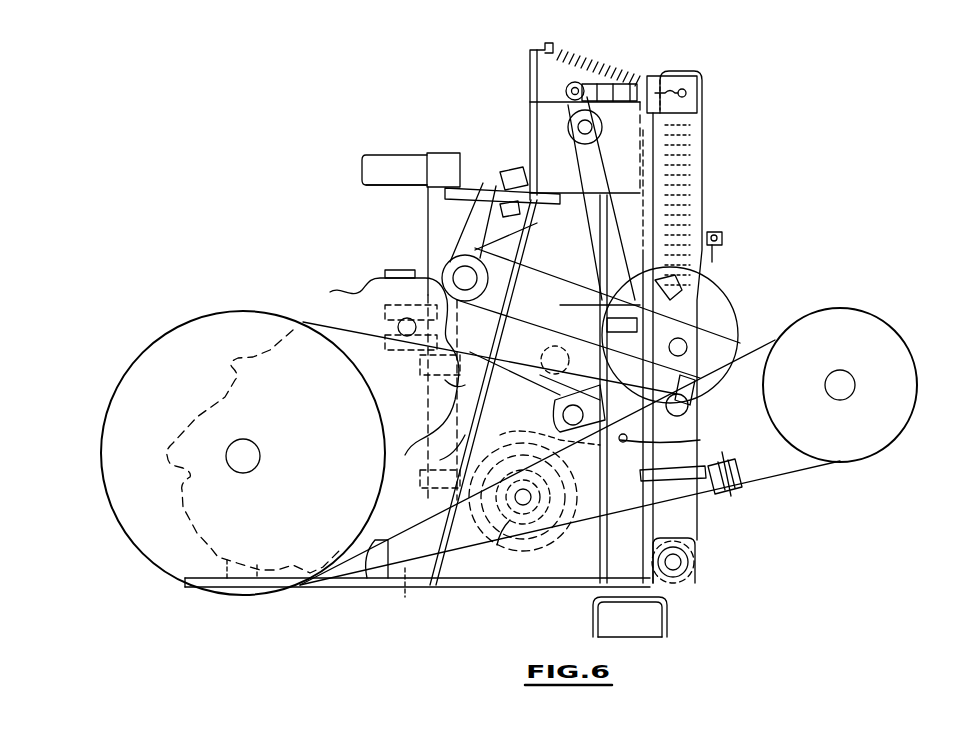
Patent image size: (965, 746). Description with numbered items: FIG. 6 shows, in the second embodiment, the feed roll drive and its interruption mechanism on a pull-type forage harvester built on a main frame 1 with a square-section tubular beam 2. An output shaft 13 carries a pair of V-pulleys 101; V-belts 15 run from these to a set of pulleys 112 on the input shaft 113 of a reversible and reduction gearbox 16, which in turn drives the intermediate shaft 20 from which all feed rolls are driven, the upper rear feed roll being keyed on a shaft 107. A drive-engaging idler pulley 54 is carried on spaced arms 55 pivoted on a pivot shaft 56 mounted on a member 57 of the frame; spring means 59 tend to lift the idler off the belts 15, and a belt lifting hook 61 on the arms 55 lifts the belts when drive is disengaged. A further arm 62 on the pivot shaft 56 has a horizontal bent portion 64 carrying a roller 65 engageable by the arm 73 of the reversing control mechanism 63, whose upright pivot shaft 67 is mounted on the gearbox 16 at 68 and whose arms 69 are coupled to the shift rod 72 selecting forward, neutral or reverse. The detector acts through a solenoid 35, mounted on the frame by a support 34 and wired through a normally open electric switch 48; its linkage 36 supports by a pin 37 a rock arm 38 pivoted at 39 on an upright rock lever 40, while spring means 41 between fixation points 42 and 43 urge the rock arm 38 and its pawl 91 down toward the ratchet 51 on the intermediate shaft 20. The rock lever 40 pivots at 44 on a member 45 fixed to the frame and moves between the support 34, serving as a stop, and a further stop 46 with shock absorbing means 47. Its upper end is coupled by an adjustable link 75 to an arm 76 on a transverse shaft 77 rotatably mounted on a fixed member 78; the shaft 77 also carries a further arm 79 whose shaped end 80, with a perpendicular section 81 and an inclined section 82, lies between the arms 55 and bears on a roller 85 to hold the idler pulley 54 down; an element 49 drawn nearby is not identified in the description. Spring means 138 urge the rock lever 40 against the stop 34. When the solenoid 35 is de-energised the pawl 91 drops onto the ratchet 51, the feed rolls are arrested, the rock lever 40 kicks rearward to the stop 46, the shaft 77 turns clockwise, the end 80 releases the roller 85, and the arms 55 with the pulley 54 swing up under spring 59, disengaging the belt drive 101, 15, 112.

The main frame 1 is at (667, 618).
The tubular beam 2 is at (596, 612).
The output shaft 13 is at (855, 380).
The V-belts 15 is at (808, 474).
The reversible and reduction gearbox 16 is at (318, 322).
The intermediate shaft 20 is at (518, 515).
The support 34 is at (592, 388).
The solenoid 35 is at (665, 230).
The linkage 36 is at (563, 413).
The pin 37 is at (722, 466).
The rock arm 38 is at (700, 440).
The pivot 39 is at (690, 418).
The rock lever 40 is at (697, 548).
The spring means 41 is at (710, 352).
The fixation point 42 is at (722, 240).
The fixation point 43 is at (700, 400).
The pivot 44 is at (695, 565).
The member 45 is at (697, 583).
The stop 46 is at (742, 487).
The shock absorbing means 47 is at (712, 493).
The electric switch 48 is at (690, 272).
The pivot 49 is at (742, 312).
The ratchet 51 is at (497, 545).
The drive-engaging idler pulley 54 is at (722, 292).
The arms 55 is at (575, 290).
The pivot shaft 56 is at (440, 262).
The member 57 is at (432, 418).
The spring means 59 is at (665, 190).
The belt lifting hook 61 is at (530, 430).
The further arm 62 is at (458, 220).
The reversing control mechanism 63 is at (415, 151).
The bent portion 64 is at (486, 186).
The roller 65 is at (513, 170).
The pivot shaft 67 is at (428, 450).
The pivotal mounting 68 is at (428, 390).
The arms 69 is at (368, 288).
The shift rod 72 is at (395, 325).
The arm 73 is at (403, 186).
The link 75 is at (632, 80).
The arm 76 is at (660, 112).
The transverse shaft 77 is at (645, 118).
The fixed member 78 is at (530, 118).
The further arm 79 is at (635, 205).
The end 80 is at (598, 305).
The section 81 is at (607, 325).
The further section 82 is at (702, 303).
The roller 85 is at (560, 346).
The pawl 91 is at (512, 437).
The V-pulleys 101 is at (893, 343).
The shaft 107 is at (540, 380).
The pulleys 112 is at (385, 589).
The input shaft 113 is at (257, 467).
The spring means 138 is at (606, 60).